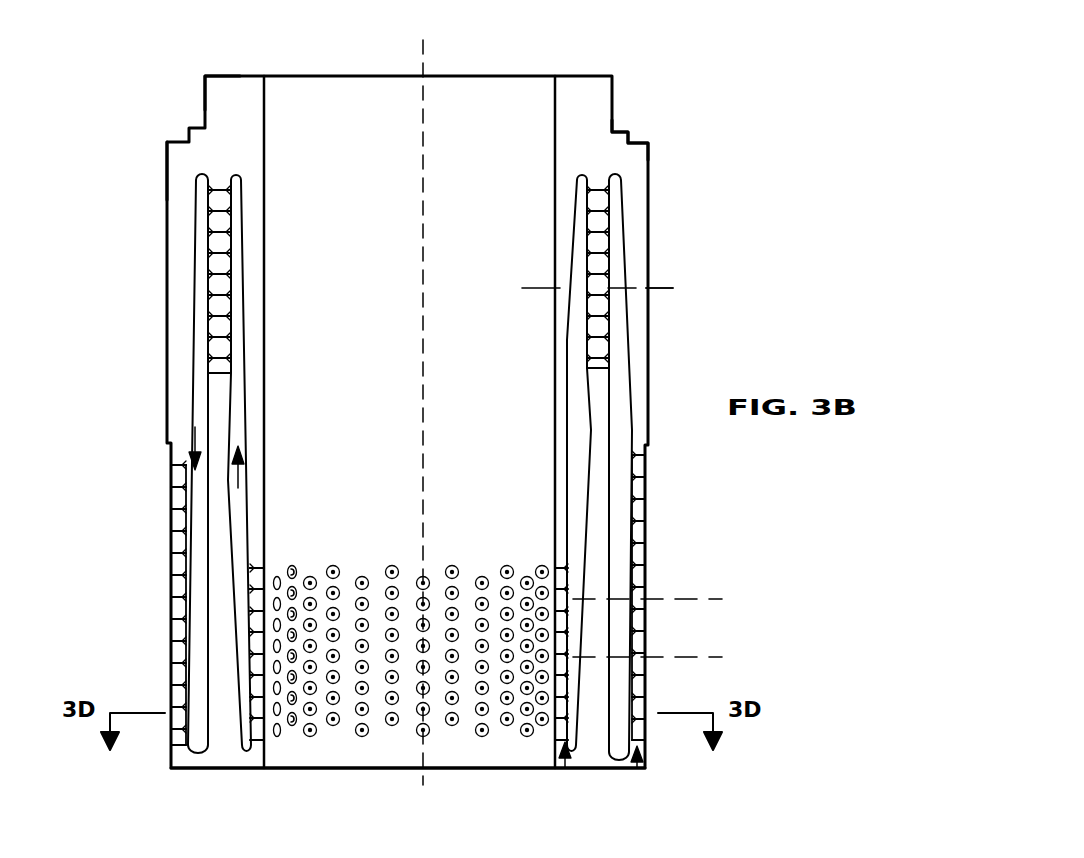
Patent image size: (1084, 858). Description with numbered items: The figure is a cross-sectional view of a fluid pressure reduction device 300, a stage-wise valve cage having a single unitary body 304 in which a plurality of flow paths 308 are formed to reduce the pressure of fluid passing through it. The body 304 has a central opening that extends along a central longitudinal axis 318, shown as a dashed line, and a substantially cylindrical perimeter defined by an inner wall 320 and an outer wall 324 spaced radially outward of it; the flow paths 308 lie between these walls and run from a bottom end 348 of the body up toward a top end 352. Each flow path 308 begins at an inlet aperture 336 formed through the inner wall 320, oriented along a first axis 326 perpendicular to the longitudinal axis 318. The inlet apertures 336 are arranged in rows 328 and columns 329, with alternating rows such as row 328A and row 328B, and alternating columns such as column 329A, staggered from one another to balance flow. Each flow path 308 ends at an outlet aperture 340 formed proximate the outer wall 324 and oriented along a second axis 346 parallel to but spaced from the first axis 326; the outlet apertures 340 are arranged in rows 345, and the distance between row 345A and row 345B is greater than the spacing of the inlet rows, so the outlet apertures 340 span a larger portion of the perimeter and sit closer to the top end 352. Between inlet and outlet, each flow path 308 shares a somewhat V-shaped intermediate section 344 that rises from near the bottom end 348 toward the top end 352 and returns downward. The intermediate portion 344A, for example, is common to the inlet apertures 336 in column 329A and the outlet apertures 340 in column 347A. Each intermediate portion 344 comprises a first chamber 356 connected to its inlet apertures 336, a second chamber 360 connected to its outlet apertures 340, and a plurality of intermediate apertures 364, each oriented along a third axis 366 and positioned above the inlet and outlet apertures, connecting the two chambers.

The fluid pressure reduction device 300 is at (643, 70).
The unitary body 304 is at (640, 133).
The flow paths 308 is at (168, 318).
The central longitudinal axis 318 is at (424, 60).
The inner wall 320 is at (265, 97).
The outer wall 324 is at (166, 176).
The first axis 326 is at (722, 657).
The rows of inlet apertures 328 is at (248, 585).
The row of inlet apertures 328A is at (144, 598).
The row of inlet apertures 328B is at (182, 638).
The columns of inlet apertures 329 is at (360, 560).
The column of inlet apertures 329A is at (563, 772).
The inlet apertures 336 is at (550, 568).
The outlet apertures 340 is at (642, 490).
The intermediate section 344 is at (190, 255).
The intermediate portion 344A is at (630, 292).
The rows of outlet apertures 345 is at (168, 474).
The row of outlet apertures 345A is at (105, 481).
The row of outlet apertures 345B is at (127, 536).
The second axis 346 is at (722, 599).
The column of outlet apertures 347A is at (638, 772).
The bottom end 348 is at (404, 770).
The top end 352 is at (218, 75).
The first chamber 356 is at (236, 385).
The second chamber 360 is at (200, 395).
The intermediate apertures 364 is at (216, 195).
The third axis 366 is at (673, 288).